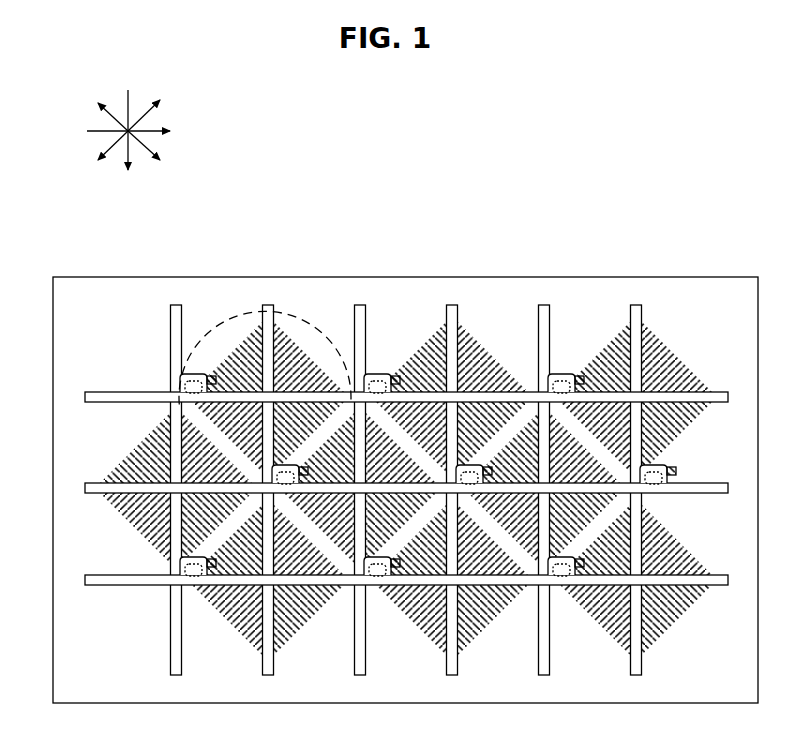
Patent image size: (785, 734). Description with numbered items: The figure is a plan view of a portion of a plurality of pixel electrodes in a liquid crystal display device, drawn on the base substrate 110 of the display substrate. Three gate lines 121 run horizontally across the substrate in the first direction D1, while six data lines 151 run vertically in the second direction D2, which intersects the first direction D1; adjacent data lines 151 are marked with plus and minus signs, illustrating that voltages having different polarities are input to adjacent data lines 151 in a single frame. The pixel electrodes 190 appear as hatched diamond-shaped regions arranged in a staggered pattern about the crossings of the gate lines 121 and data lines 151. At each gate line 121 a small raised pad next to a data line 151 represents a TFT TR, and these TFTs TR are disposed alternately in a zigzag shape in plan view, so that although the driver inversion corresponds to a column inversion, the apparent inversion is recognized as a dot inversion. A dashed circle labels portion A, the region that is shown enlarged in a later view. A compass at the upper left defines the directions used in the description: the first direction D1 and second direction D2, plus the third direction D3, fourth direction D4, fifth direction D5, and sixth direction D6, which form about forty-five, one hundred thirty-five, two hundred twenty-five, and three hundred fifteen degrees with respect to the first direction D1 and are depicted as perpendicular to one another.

The base substrate 110 is at (399, 276).
The gate line 121 is at (85, 397).
The data line 151 is at (170, 307).
The pixel electrode 190 is at (305, 335).
The TFT TR is at (177, 371).
The portion A is at (217, 325).
The first direction D1 is at (140, 131).
The second direction D2 is at (127, 140).
The third direction D3 is at (155, 155).
The fourth direction D4 is at (103, 155).
The fifth direction D5 is at (103, 107).
The sixth direction D6 is at (154, 107).